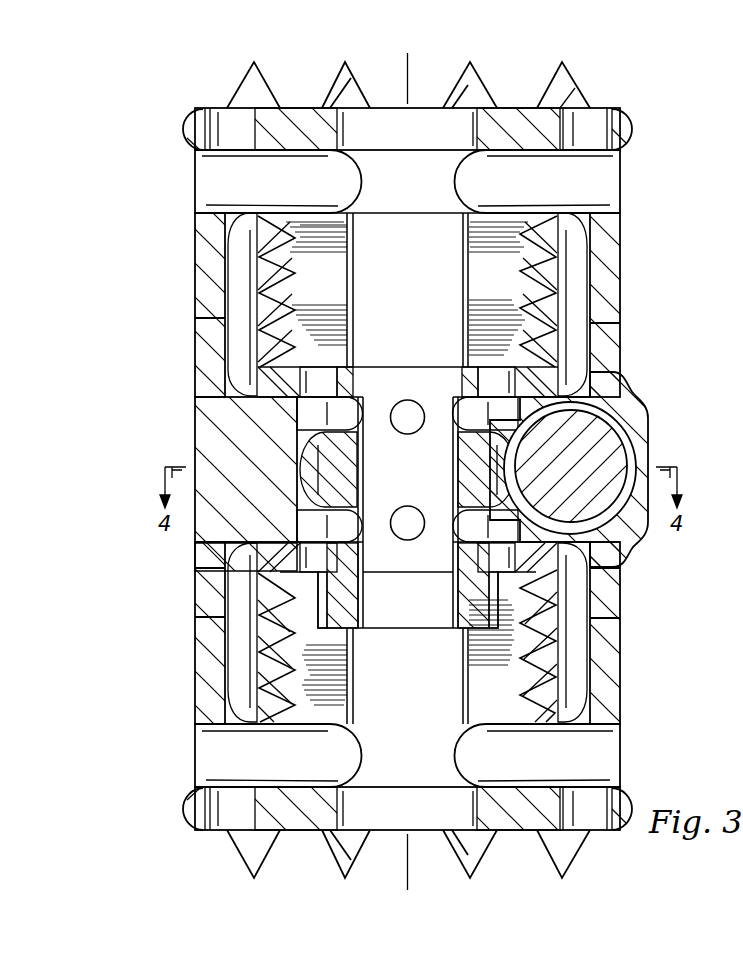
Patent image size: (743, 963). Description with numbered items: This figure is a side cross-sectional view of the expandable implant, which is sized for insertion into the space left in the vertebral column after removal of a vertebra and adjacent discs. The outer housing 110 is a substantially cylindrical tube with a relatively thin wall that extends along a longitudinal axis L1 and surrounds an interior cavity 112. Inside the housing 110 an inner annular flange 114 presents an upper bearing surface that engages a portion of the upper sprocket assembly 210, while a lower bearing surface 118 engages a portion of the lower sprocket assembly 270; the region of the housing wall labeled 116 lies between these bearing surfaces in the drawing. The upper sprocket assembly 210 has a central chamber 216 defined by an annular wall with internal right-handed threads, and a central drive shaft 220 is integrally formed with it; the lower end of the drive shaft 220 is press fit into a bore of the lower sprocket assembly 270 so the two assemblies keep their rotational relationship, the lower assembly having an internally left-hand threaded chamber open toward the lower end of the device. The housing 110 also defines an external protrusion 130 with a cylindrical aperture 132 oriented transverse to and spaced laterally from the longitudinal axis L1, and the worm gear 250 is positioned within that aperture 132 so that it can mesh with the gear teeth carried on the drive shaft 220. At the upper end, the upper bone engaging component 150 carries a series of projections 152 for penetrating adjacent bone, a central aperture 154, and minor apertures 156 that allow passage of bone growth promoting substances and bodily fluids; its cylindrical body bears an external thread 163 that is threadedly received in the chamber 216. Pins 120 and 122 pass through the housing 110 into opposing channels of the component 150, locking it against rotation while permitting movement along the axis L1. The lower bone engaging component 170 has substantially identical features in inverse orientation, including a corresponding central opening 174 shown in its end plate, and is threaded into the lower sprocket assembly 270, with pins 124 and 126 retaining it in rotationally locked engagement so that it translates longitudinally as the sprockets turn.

The longitudinal axis L1 is at (407, 78).
The outer housing 110 is at (197, 290).
The interior cavity 112 is at (427, 338).
The inner annular flange 114 is at (285, 430).
The upper block 116 is at (222, 395).
The lower bearing surface 118 is at (228, 548).
The pin 120 is at (206, 180).
The pin 122 is at (612, 180).
The pin 124 is at (206, 753).
The pin 126 is at (620, 756).
The external protrusion 130 is at (601, 459).
The cylindrical aperture 132 is at (628, 553).
The upper bone engaging component 150 is at (439, 121).
The projections 152 is at (240, 92).
The central aperture 154 is at (427, 143).
The minor apertures 156 is at (600, 115).
The external thread 163 is at (540, 248).
The lower bone engaging component 170 is at (379, 832).
The lower plate central portion 174 is at (427, 817).
The upper sprocket assembly 210 is at (562, 298).
The central chamber 216 is at (590, 265).
The central drive shaft 220 is at (427, 478).
The worm gear 250 is at (612, 432).
The lower sprocket assembly 270 is at (262, 640).